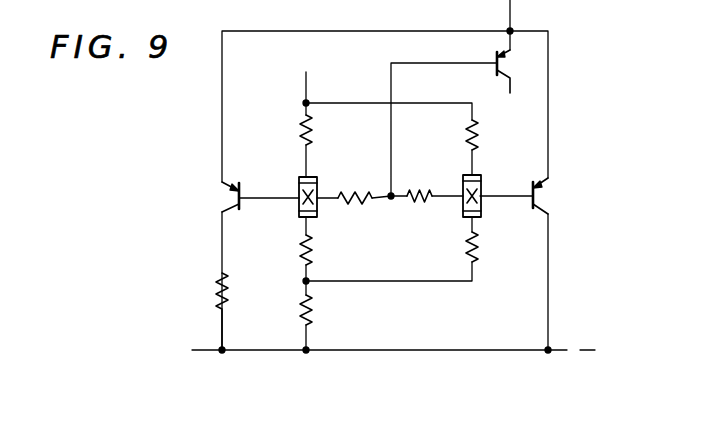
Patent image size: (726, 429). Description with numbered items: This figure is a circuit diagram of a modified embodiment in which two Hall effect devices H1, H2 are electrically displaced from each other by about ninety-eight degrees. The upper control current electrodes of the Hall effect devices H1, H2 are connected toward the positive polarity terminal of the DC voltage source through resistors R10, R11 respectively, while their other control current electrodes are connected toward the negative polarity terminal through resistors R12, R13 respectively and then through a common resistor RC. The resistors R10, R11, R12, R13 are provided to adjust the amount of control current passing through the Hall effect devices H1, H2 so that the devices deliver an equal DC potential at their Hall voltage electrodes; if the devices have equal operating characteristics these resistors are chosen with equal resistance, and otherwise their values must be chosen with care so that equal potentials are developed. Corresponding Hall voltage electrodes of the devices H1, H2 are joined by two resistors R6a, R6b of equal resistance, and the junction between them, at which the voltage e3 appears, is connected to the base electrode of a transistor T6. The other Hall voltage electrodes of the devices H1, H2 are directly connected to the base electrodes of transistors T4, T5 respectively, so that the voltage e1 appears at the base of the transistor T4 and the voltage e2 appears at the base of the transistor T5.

The transistor T4 is at (238, 187).
The transistor T5 is at (535, 196).
The transistor T6 is at (498, 70).
The resistor R10 is at (311, 131).
The resistor R11 is at (476, 133).
The resistor R12 is at (309, 258).
The resistor R13 is at (469, 246).
The resistor RC is at (309, 320).
The resistor R6a is at (354, 217).
The resistor R6b is at (415, 199).
The Hall effect device H1 is at (316, 179).
The Hall effect device H2 is at (481, 181).
The voltage e1 is at (261, 198).
The voltage e2 is at (516, 196).
The voltage e3 is at (391, 350).